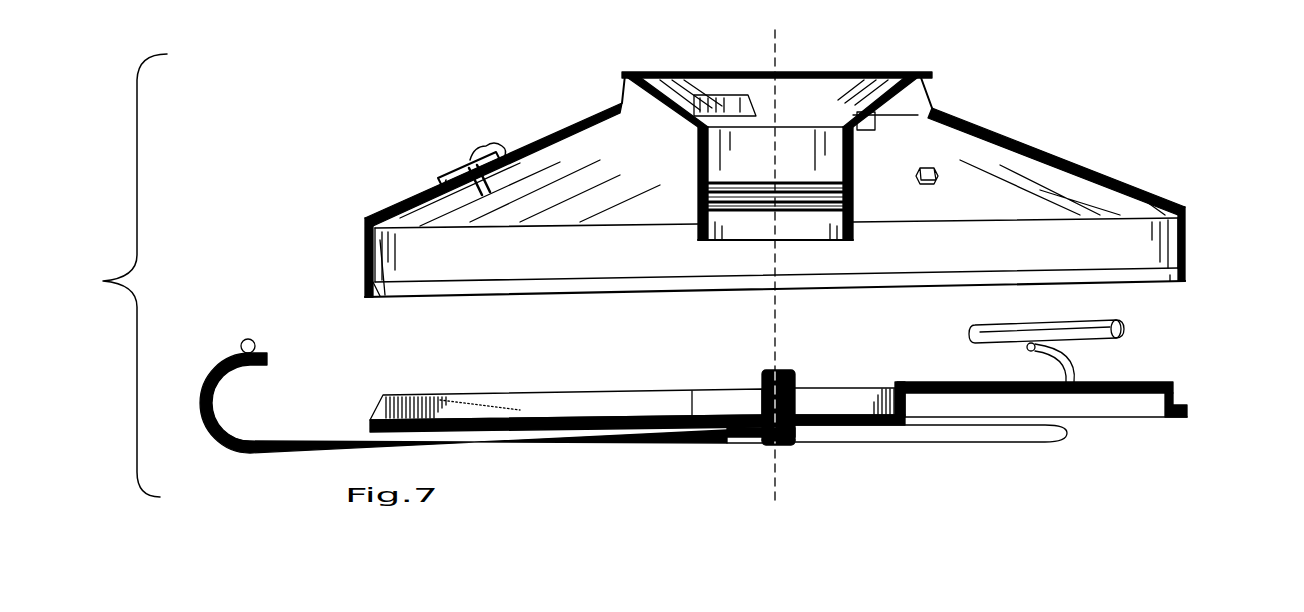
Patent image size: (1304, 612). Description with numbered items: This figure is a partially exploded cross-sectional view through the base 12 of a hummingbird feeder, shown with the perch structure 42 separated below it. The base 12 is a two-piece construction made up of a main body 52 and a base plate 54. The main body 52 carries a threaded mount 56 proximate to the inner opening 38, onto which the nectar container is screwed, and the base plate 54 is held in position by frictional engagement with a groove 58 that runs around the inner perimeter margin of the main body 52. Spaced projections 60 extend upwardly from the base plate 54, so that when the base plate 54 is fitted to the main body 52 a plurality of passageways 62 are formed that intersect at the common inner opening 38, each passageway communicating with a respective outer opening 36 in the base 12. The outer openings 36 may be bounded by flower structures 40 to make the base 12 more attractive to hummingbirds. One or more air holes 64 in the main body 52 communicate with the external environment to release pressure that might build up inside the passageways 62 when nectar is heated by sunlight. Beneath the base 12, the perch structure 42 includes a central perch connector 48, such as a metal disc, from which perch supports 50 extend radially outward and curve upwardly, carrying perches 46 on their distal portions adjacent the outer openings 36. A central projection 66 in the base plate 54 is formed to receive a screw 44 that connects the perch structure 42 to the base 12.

The base 12 is at (1055, 102).
The outer openings 36 is at (472, 162).
The inner opening 38 is at (788, 134).
The flower structures 40 is at (498, 150).
The perch structure 42 is at (757, 453).
The screw 44 is at (785, 448).
The perches 46 is at (244, 340).
The central perch connector 48 is at (745, 440).
The perch supports 50 is at (243, 452).
The main body 52 is at (883, 66).
The base plate 54 is at (1195, 382).
The threaded mount 56 is at (795, 215).
The groove 58 is at (405, 292).
The spaced projections 60 is at (440, 398).
The passageways 62 is at (566, 416).
The air holes 64 is at (722, 105).
The central projection 66 is at (780, 370).